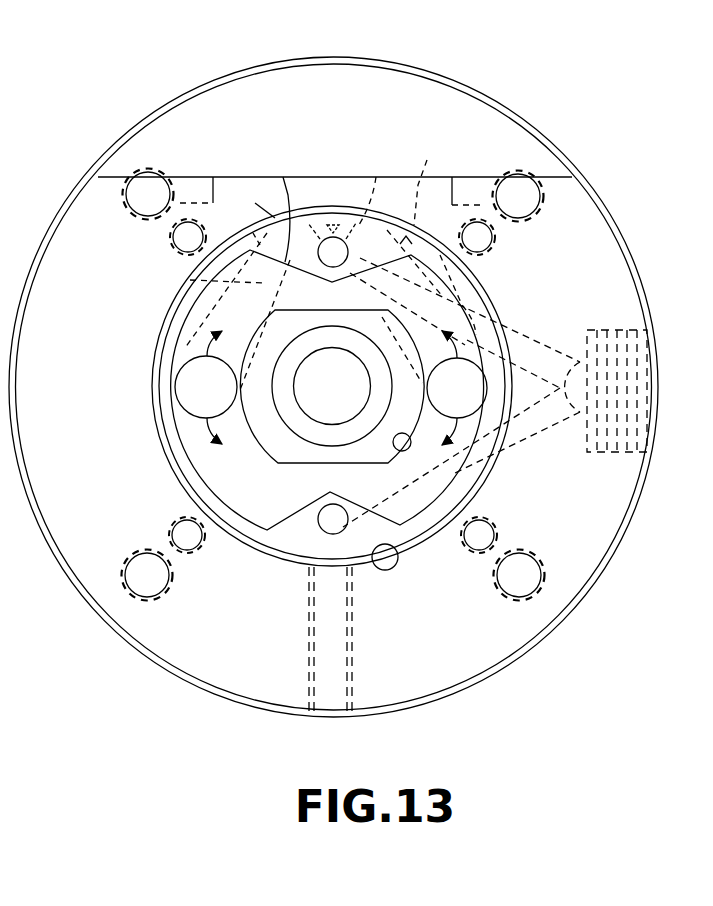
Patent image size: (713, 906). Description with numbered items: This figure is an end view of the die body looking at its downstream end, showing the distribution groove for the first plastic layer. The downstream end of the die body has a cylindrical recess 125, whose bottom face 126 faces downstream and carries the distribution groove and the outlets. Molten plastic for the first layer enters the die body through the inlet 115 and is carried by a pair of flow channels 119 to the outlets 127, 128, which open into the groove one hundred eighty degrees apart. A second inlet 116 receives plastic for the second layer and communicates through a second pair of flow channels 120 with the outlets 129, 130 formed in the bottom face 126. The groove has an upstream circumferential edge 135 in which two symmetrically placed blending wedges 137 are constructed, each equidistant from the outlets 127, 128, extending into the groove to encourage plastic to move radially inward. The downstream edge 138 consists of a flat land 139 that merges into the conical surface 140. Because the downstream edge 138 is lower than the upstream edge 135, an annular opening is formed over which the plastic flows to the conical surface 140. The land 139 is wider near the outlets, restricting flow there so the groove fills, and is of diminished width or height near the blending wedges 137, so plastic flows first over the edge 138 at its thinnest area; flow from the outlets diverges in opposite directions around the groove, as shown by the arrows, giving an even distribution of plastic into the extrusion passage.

The inlet 115 is at (328, 185).
The inlet 116 is at (640, 331).
The flow channels 119 is at (162, 278).
The second pair of flow channels 120 is at (530, 340).
The cylindrical recess 125 is at (395, 560).
The bottom face 126 is at (247, 527).
The outlet 127 is at (186, 400).
The outlet 128 is at (436, 401).
The outlet 129 is at (348, 245).
The outlet 130 is at (327, 528).
The upstream circumferential edge 135 is at (180, 443).
The blending wedges 137 is at (265, 577).
The downstream edge 138 is at (393, 452).
The flat land 139 is at (276, 455).
The conical surface 140 is at (315, 437).